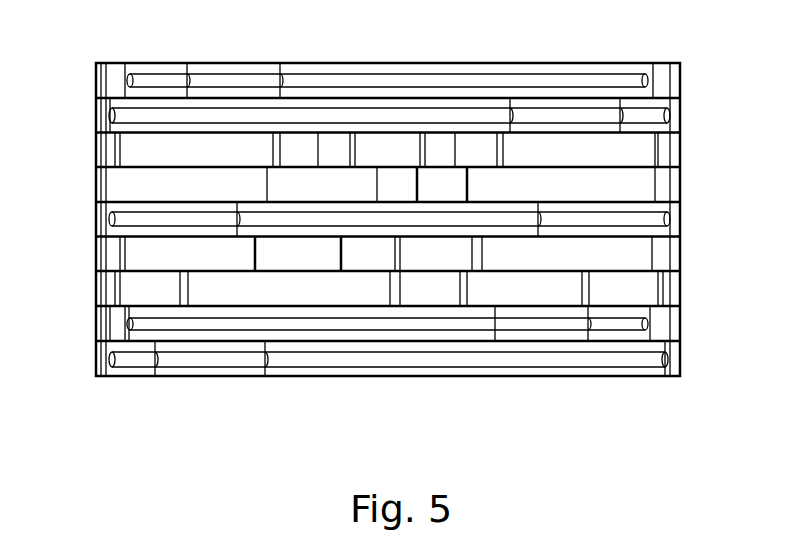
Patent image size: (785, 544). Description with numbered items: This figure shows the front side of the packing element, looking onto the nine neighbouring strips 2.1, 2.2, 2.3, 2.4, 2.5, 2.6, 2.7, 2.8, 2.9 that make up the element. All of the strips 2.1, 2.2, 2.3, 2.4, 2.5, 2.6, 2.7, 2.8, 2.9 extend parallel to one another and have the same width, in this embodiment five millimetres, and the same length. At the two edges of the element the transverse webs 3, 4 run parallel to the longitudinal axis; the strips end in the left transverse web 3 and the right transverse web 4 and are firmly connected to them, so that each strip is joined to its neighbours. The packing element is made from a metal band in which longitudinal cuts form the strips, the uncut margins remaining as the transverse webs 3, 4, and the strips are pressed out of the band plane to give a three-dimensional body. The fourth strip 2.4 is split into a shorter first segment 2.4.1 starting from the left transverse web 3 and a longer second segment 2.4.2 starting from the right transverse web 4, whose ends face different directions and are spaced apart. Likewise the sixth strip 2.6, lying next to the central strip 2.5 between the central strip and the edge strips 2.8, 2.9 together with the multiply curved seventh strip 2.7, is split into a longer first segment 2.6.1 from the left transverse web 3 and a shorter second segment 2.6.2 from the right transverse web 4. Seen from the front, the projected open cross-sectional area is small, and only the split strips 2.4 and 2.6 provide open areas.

The first strip 2.1 is at (682, 362).
The second strip 2.2 is at (97, 330).
The third strip 2.3 is at (682, 288).
The fourth strip 2.4 is at (344, 337).
The first segment of the fourth strip 2.4.1 is at (212, 258).
The second segment of the fourth strip 2.4.2 is at (552, 255).
The central strip 2.5 is at (682, 222).
The sixth strip 2.6 is at (344, 108).
The first segment of the sixth strip 2.6.1 is at (217, 182).
The second segment of the sixth strip 2.6.2 is at (537, 182).
The seventh strip 2.7 is at (682, 140).
The eighth strip 2.8 is at (97, 117).
The ninth strip 2.9 is at (682, 84).
The left transverse web 3 is at (97, 227).
The right transverse web 4 is at (682, 168).